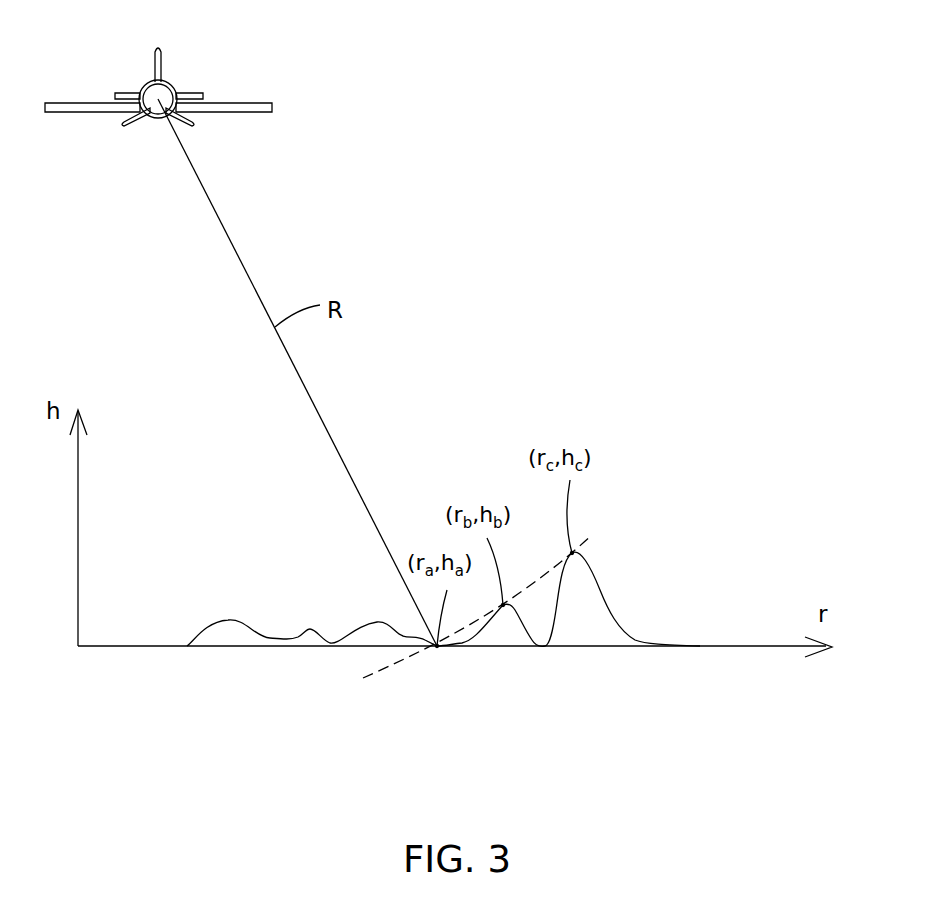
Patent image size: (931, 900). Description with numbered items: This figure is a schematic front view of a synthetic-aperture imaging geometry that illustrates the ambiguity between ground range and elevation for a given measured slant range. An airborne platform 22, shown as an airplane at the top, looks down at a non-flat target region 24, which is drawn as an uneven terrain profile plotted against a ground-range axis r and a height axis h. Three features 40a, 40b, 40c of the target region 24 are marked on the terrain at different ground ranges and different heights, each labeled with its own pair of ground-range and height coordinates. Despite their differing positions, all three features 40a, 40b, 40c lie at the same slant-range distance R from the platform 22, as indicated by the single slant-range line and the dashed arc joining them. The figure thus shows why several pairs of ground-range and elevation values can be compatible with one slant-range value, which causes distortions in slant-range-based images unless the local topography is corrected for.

The platform 22 is at (203, 59).
The target region 24 is at (312, 571).
The feature 40a is at (438, 664).
The feature 40b is at (510, 660).
The feature 40c is at (600, 546).